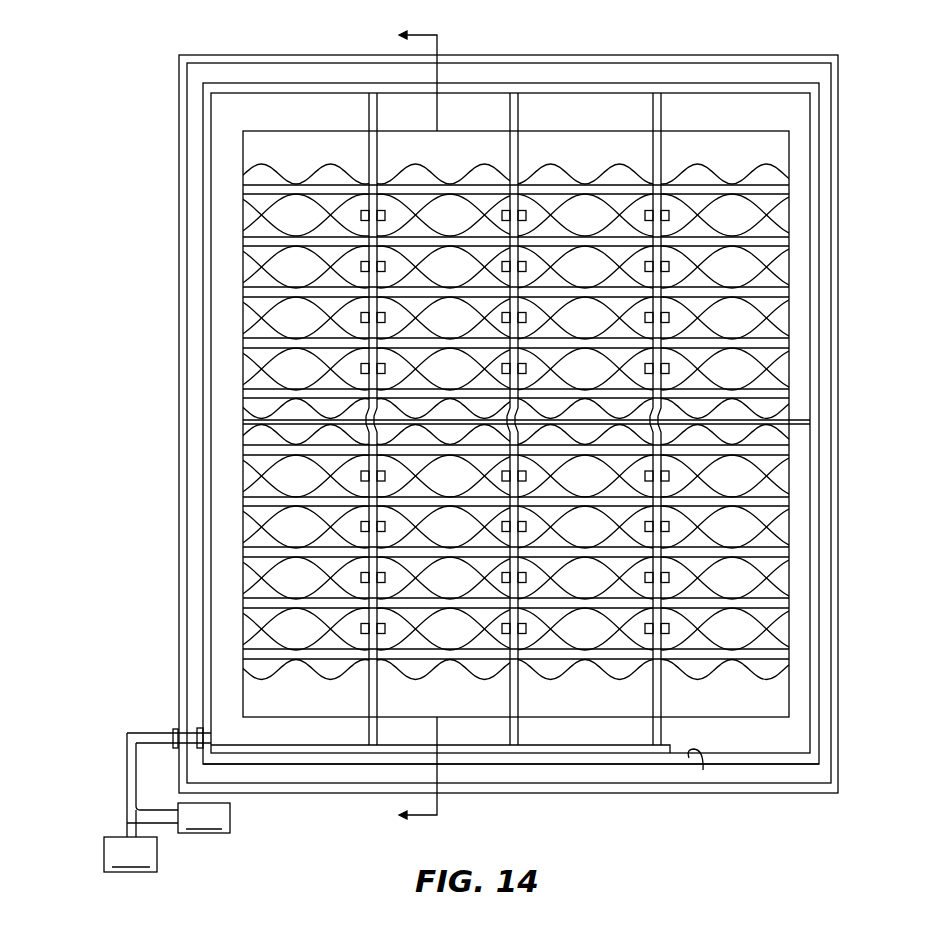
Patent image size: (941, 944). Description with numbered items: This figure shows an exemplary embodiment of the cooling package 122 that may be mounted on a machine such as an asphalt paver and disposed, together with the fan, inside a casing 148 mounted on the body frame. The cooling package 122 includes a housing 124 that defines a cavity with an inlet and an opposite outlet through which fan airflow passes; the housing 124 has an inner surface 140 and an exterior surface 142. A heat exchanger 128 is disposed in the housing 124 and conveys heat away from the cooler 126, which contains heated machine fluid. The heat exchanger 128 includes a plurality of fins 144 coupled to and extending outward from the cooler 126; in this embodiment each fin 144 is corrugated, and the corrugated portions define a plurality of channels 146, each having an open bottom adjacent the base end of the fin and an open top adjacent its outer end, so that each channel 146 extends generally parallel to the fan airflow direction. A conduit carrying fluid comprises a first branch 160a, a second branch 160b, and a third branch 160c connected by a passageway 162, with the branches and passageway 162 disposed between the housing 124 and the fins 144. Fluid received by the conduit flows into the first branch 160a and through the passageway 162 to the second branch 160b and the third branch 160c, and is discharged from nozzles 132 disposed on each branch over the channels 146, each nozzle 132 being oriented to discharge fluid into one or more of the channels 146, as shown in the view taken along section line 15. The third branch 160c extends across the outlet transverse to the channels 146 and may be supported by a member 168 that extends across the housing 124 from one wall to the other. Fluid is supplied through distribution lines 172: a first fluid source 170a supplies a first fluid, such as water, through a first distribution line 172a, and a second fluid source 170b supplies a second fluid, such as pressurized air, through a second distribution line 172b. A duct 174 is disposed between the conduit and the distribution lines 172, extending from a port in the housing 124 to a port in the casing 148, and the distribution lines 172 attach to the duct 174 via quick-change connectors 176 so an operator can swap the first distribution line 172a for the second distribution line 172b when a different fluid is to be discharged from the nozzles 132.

The section line for FIG. 15 is at (402, 426).
The cooling package 122 is at (633, 68).
The housing 124 is at (743, 88).
The cooler 126 is at (768, 700).
The heat exchanger 128 is at (856, 107).
The nozzles 132 is at (361, 214).
The inner surface 140 is at (703, 770).
The exterior surface 142 is at (623, 765).
The fins 144 is at (258, 547).
The channels 146 is at (385, 214).
The casing 148 is at (557, 53).
The first branch 160a is at (383, 698).
The second branch 160b is at (665, 699).
The third branch 160c is at (522, 699).
The passageway 162 is at (542, 748).
The member 168 is at (805, 412).
The first fluid source 170a is at (204, 818).
The second fluid source 170b is at (130, 854).
The distribution lines 172 is at (136, 790).
The first distribution line 172a is at (158, 828).
The second distribution line 172b is at (122, 832).
The duct 174 is at (200, 728).
The connectors 176 is at (176, 729).